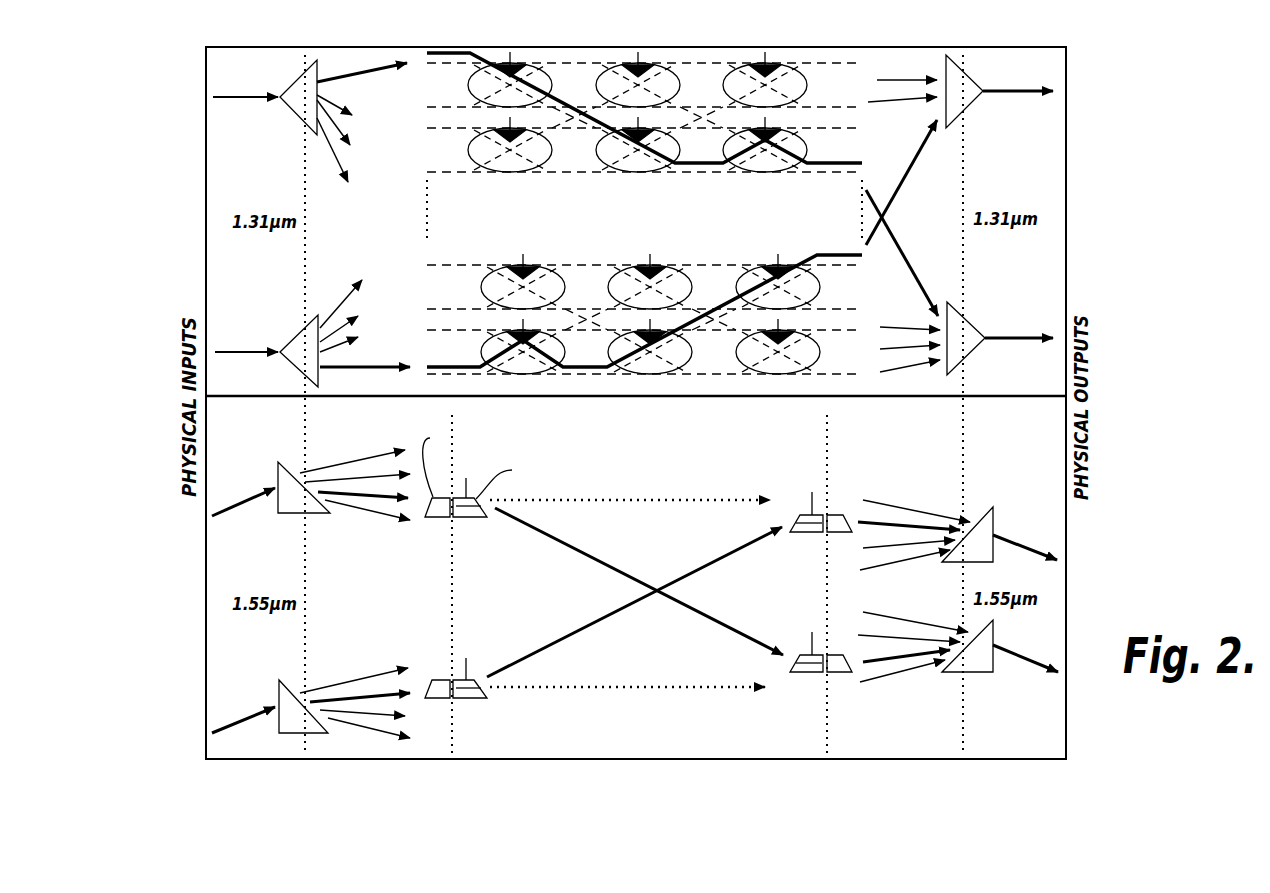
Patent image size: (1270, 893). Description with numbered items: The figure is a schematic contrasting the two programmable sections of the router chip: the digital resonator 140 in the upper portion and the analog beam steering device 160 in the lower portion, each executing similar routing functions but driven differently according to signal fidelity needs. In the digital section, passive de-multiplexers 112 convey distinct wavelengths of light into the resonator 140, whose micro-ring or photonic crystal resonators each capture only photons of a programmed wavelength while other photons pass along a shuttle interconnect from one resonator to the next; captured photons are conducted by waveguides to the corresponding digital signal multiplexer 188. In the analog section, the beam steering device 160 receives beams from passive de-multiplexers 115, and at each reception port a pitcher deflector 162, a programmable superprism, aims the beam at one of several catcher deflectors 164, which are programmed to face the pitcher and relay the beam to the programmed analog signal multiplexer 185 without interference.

The digital resonator 140 is at (345, 44).
The passive de-multiplexer 112 is at (297, 90).
The digital signal multiplexer 188 is at (967, 97).
The analog beam steering device 160 is at (627, 763).
The passive de-multiplexer 115 is at (288, 513).
The pitcher deflector 162 is at (470, 517).
The catcher deflector 164 is at (808, 532).
The analog signal multiplexer 185 is at (945, 562).